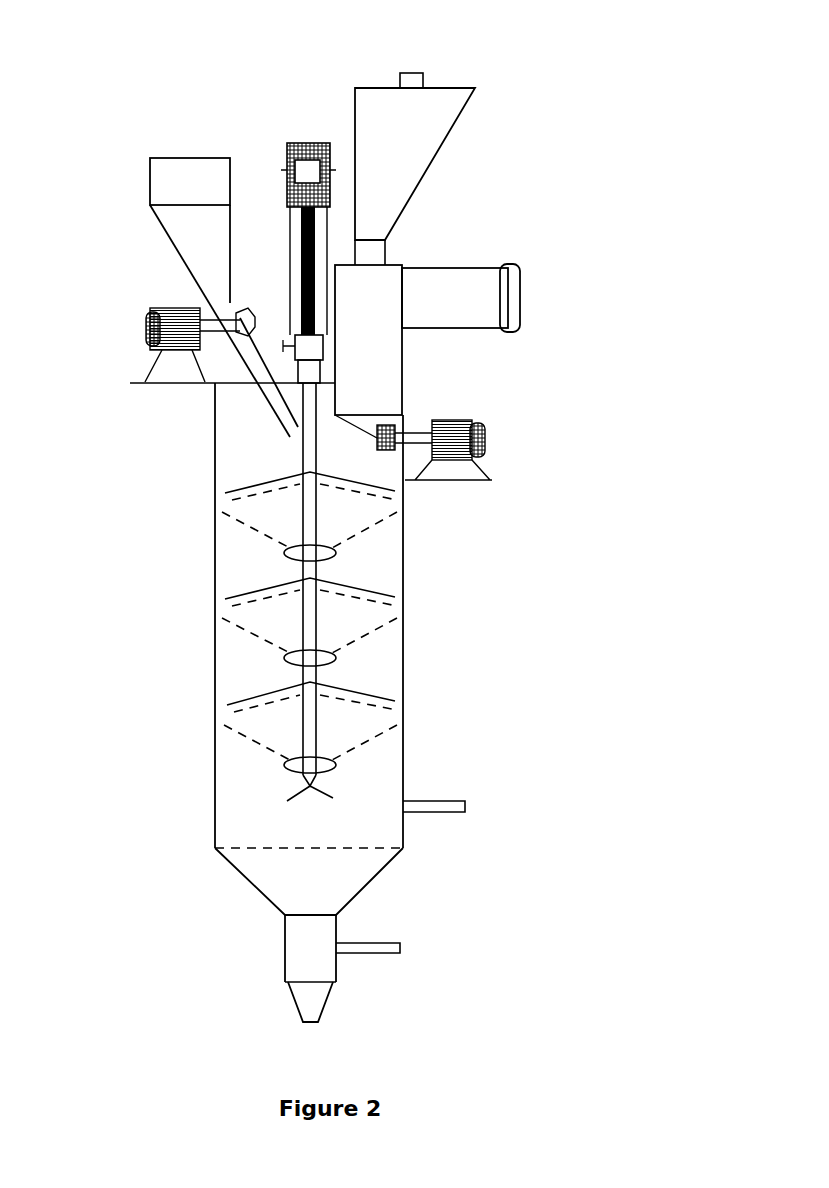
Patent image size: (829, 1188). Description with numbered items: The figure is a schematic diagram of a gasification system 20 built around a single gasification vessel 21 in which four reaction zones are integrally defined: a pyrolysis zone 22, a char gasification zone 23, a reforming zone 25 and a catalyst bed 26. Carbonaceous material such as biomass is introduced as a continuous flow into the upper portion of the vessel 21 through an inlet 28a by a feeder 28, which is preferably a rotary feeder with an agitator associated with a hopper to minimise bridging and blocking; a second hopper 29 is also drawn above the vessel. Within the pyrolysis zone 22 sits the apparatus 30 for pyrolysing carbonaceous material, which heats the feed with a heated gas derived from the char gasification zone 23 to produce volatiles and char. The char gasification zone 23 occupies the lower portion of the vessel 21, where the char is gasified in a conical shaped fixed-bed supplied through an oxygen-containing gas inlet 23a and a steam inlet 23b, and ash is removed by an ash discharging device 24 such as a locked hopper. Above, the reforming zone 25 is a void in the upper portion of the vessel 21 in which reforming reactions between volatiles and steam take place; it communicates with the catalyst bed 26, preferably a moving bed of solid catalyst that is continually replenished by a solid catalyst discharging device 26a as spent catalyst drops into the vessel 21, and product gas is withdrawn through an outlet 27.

The gasification system 20 is at (583, 99).
The gasification vessel 21 is at (210, 768).
The pyrolysis zone 22 is at (250, 565).
The char gasification zone 23 is at (307, 870).
The oxygen-containing gas inlet 23a is at (408, 948).
The steam inlet 23b is at (476, 807).
The ash discharging device 24 is at (315, 992).
The reforming zone 25 is at (250, 450).
The catalyst bed 26 is at (368, 327).
The solid catalyst discharging device 26a is at (405, 420).
The outlet 27 is at (465, 265).
The feeder 28 is at (200, 270).
The inlet 28a is at (290, 399).
The second hopper 29 is at (415, 156).
The apparatus for pyrolysing carbonaceous material 30 is at (444, 550).